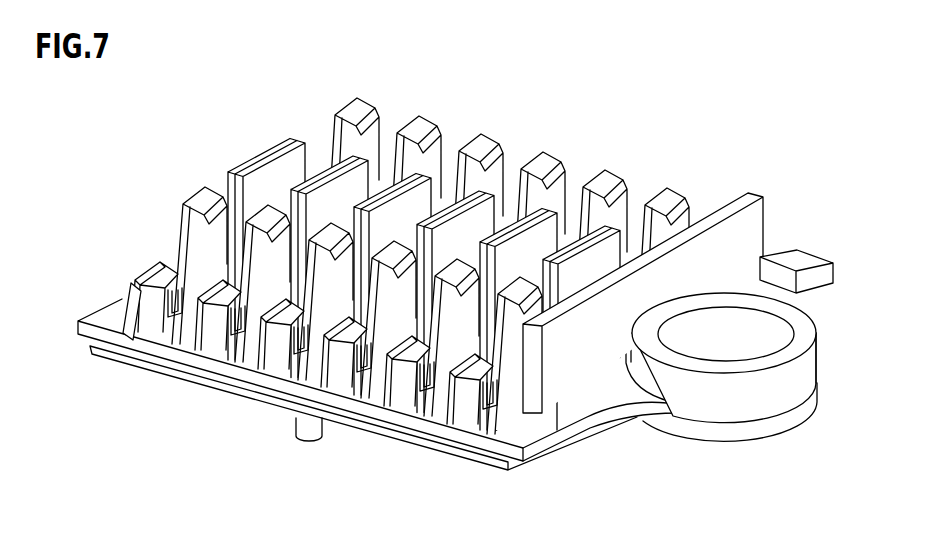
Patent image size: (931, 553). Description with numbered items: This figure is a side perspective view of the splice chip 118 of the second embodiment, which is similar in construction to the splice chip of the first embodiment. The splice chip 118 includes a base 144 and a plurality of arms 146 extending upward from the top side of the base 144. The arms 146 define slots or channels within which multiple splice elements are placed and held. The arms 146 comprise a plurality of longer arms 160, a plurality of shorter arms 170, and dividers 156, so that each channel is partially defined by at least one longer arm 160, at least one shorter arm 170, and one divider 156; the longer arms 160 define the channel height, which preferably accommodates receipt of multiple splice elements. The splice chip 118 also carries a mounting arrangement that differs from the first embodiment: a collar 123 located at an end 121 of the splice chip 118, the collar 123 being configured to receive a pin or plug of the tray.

The splice chip 118 is at (129, 180).
The end 121 is at (633, 485).
The collar 123 is at (805, 372).
The base 144 is at (433, 445).
The arms 146 is at (477, 140).
The dividers 156 is at (333, 160).
The longer arms 160 is at (270, 223).
The shorter arms 170 is at (133, 332).